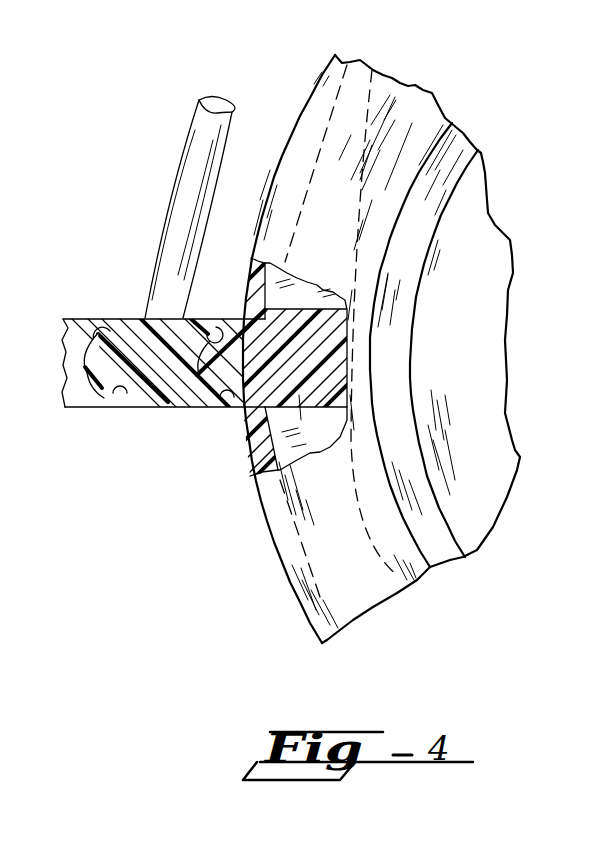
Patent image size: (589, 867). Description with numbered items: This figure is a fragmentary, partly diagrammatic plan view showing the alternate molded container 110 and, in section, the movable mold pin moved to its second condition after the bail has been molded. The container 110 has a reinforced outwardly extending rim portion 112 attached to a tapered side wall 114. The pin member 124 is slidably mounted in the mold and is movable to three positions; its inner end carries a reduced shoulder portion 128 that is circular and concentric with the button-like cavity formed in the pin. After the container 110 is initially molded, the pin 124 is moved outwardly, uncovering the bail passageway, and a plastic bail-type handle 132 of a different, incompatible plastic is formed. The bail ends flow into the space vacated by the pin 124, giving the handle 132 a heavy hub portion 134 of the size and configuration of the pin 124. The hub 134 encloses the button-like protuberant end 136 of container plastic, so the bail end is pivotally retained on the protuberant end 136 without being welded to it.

The container 110 is at (295, 343).
The rim portion 112 is at (373, 82).
The side wall 114 is at (422, 112).
The pin member 124 is at (173, 370).
The reduced shoulder portion 128 is at (112, 342).
The bail-type handle 132 is at (172, 195).
The hub portion 134 is at (164, 398).
The button-like protuberant end 136 is at (103, 399).